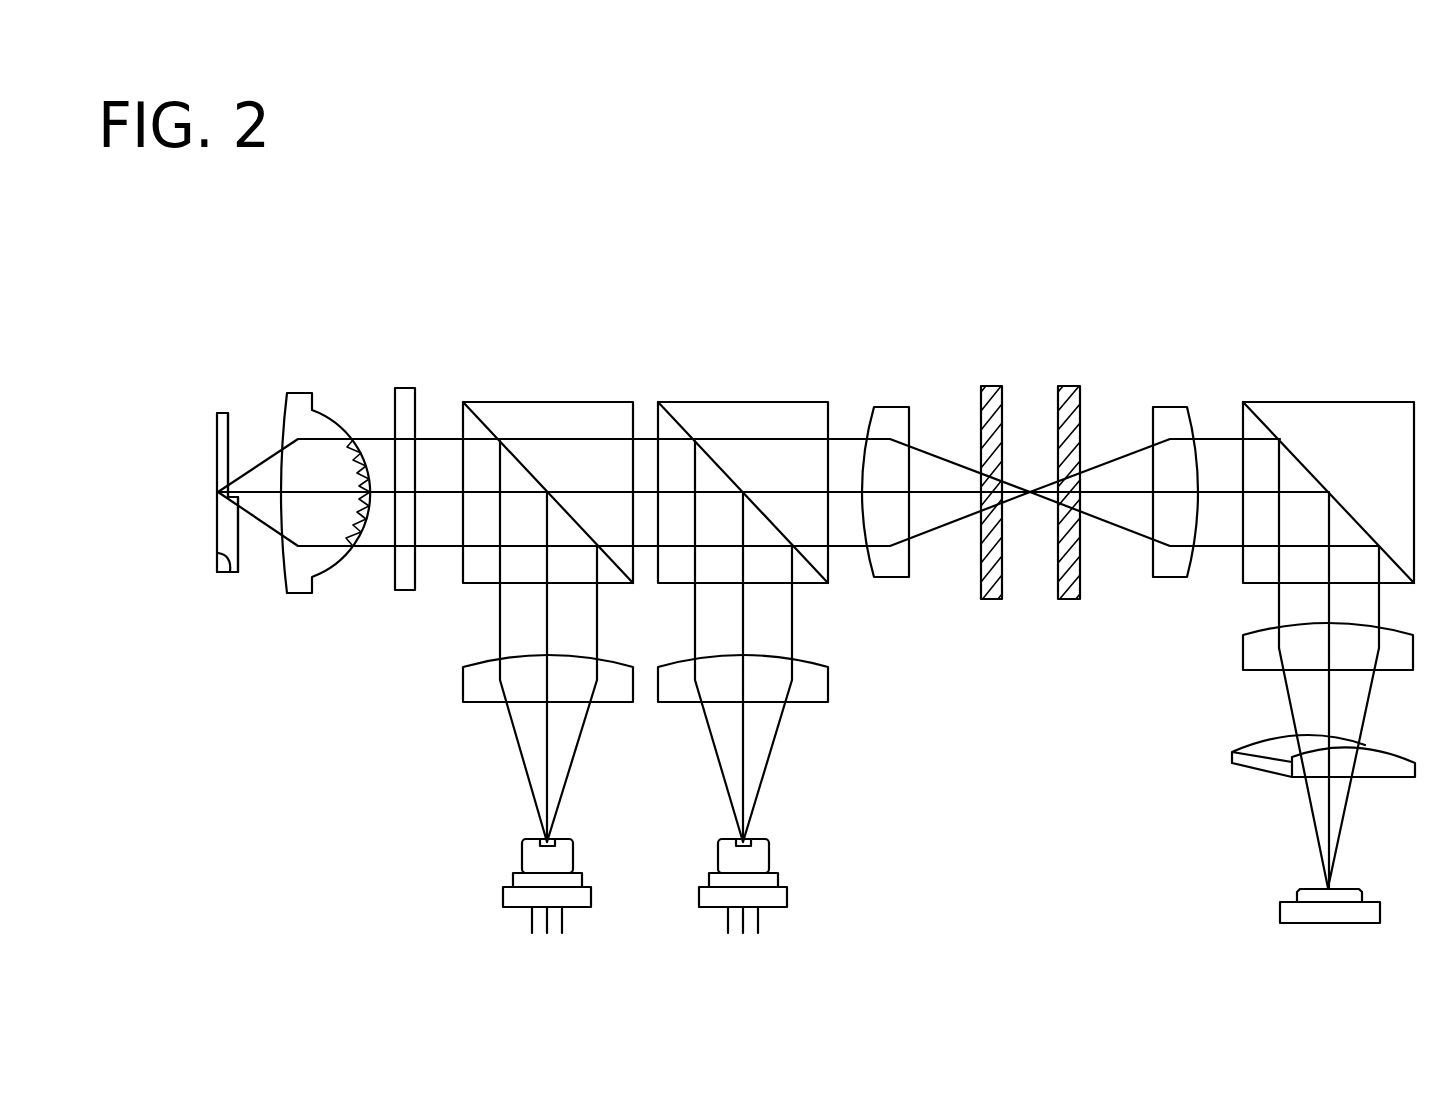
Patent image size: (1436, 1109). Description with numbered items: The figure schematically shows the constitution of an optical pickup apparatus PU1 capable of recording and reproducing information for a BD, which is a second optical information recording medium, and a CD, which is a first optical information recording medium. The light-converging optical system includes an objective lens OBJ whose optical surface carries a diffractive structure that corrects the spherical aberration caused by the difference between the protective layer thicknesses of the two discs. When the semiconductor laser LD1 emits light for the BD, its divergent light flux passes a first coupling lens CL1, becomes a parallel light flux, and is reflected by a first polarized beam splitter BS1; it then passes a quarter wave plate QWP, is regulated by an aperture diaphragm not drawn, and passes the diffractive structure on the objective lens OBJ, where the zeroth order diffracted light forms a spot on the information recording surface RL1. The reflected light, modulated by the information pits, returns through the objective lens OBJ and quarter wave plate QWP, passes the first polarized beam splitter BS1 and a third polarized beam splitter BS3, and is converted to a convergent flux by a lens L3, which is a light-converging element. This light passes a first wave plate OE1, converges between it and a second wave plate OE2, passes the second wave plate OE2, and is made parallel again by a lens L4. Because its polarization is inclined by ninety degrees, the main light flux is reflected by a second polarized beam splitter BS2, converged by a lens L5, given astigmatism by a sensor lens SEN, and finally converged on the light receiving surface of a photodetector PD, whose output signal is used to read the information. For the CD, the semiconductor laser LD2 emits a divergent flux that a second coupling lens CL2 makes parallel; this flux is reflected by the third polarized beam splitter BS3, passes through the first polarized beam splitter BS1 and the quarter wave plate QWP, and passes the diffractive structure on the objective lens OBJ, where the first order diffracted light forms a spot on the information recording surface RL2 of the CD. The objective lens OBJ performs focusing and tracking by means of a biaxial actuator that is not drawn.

The optical pickup apparatus PU1 is at (659, 332).
The Blu-ray disc BD is at (222, 420).
The compact disc CD is at (218, 572).
The information recording surface RL1 is at (236, 573).
The information recording surface RL2 is at (227, 412).
The objective lens OBJ is at (300, 392).
The λ/4 wave plate QWP is at (408, 450).
The first polarized beam splitter BS1 is at (548, 402).
The second polarized beam splitter BS2 is at (1328, 402).
The third polarized beam splitter BS3 is at (743, 402).
The first coupling lens CL1 is at (463, 683).
The second coupling lens CL2 is at (828, 683).
The semiconductor laser LD1 is at (573, 860).
The semiconductor laser LD2 is at (769, 860).
The lens L3 is at (890, 407).
The lens L4 is at (1168, 407).
The lens L5 is at (1243, 650).
The first wave plate OE1 is at (992, 386).
The second wave plate OE2 is at (1068, 386).
The sensor lens SEN is at (1232, 753).
The photodetector PD is at (1297, 898).